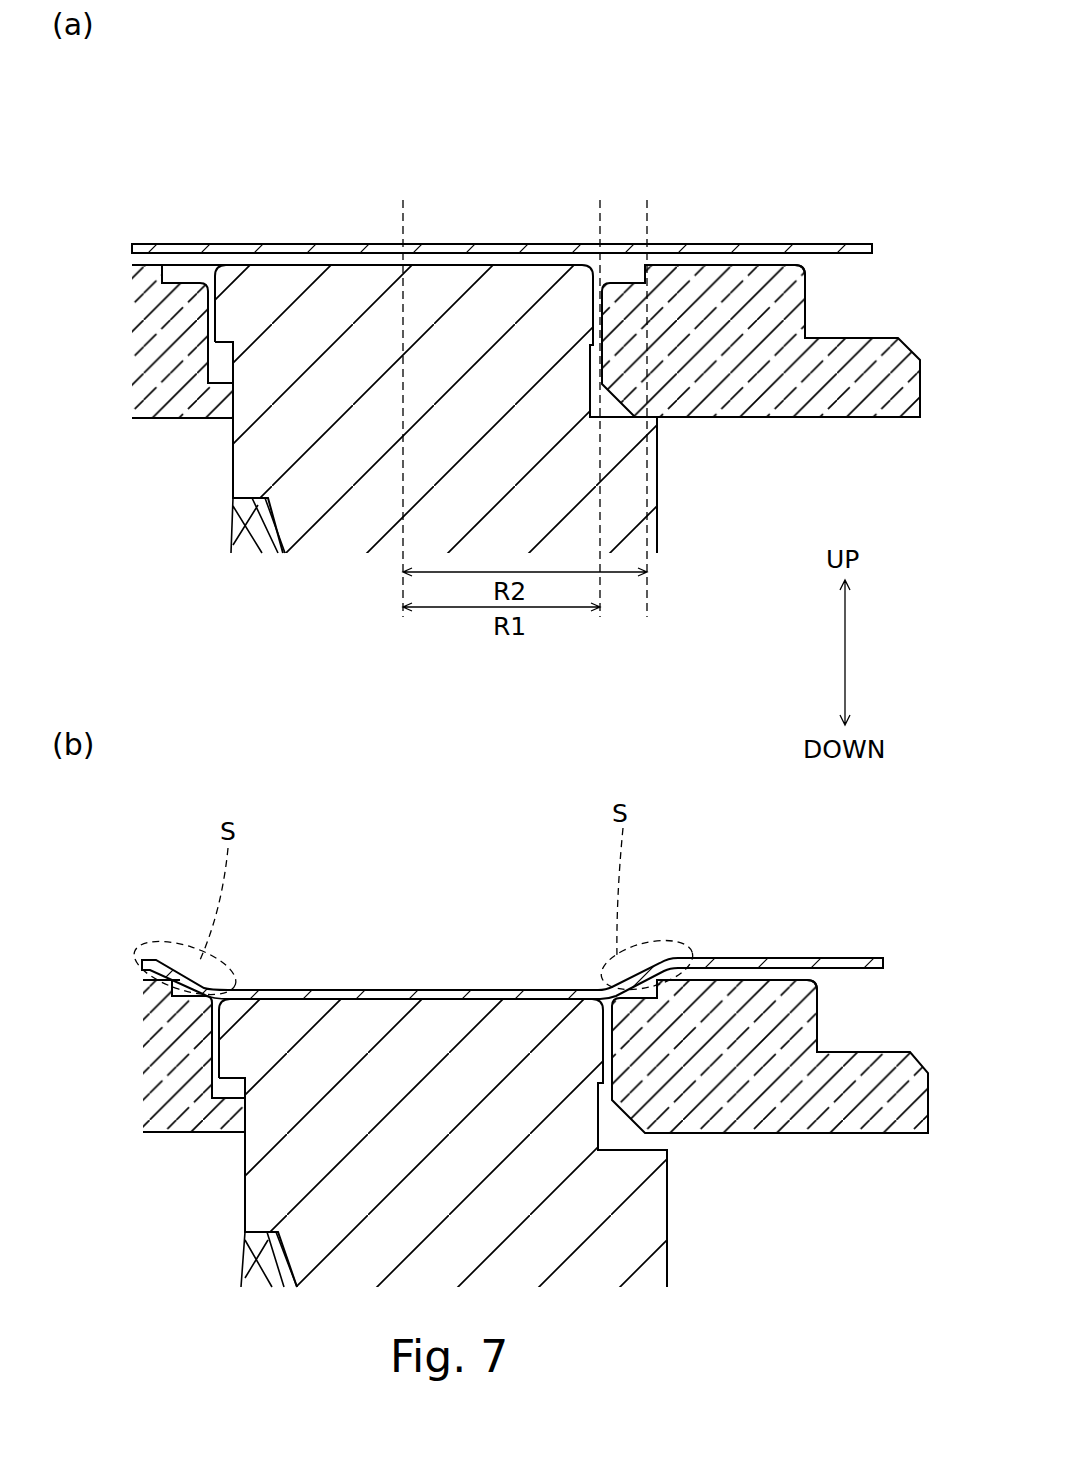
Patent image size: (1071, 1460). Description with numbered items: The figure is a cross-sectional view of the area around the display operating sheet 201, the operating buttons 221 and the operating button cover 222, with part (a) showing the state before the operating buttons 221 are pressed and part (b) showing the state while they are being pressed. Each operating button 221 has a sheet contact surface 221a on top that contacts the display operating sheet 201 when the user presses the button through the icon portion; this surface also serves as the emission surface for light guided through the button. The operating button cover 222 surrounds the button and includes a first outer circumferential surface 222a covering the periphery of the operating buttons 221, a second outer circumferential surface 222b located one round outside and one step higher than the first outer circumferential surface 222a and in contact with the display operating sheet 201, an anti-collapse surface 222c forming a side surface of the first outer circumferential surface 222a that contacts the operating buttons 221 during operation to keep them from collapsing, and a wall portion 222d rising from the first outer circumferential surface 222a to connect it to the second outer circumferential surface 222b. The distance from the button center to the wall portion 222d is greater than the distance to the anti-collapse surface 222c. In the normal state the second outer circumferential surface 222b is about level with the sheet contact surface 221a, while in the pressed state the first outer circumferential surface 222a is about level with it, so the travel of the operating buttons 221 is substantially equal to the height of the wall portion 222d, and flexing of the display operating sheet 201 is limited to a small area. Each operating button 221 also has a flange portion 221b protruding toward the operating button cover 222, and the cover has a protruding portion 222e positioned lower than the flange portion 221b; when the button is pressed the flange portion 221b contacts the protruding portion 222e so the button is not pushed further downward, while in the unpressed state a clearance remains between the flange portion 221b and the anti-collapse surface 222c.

The display operating sheet 201 is at (455, 244).
The operating buttons 221 is at (643, 477).
The sheet contact surface 221a is at (507, 264).
The flange portion 221b is at (207, 338).
The operating button cover 222 is at (167, 410).
The first outer circumferential surface 222a is at (195, 279).
The second outer circumferential surface 222b is at (142, 262).
The anti-collapse surface 222c is at (213, 320).
The wall portion 222d is at (168, 272).
The protruding portion 222e is at (213, 410).